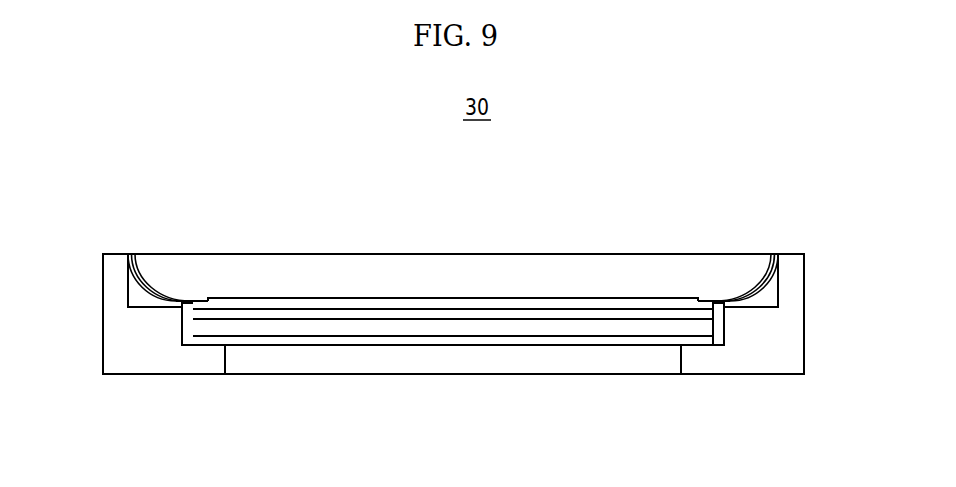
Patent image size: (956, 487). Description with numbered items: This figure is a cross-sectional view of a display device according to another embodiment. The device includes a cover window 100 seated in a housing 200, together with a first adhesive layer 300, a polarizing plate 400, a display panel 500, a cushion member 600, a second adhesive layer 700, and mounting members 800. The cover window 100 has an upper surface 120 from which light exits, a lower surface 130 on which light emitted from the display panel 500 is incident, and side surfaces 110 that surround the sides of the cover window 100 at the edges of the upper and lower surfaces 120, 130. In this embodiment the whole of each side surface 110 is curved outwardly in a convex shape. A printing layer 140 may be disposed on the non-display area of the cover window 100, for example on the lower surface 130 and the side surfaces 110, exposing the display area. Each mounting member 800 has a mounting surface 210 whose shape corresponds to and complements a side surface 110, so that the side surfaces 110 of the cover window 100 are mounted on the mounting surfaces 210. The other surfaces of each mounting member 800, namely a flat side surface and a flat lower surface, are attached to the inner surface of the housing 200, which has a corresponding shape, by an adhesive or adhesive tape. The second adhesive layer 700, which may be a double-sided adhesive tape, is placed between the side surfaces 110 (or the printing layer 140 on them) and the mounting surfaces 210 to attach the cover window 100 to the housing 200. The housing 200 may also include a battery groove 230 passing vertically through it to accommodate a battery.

The cover window 100 is at (522, 265).
The side surfaces 110 is at (770, 262).
The upper surface 120 is at (606, 253).
The lower surface 130 is at (557, 300).
The printing layer 140 is at (767, 270).
The housing 200 is at (769, 363).
The mounting surface 210 is at (768, 287).
The battery groove 230 is at (627, 362).
The first adhesive layer 300 is at (320, 304).
The polarizing plate 400 is at (365, 314).
The display panel 500 is at (425, 327).
The cushion member 600 is at (488, 340).
The second adhesive layer 700 is at (756, 297).
The mounting members 800 is at (127, 295).